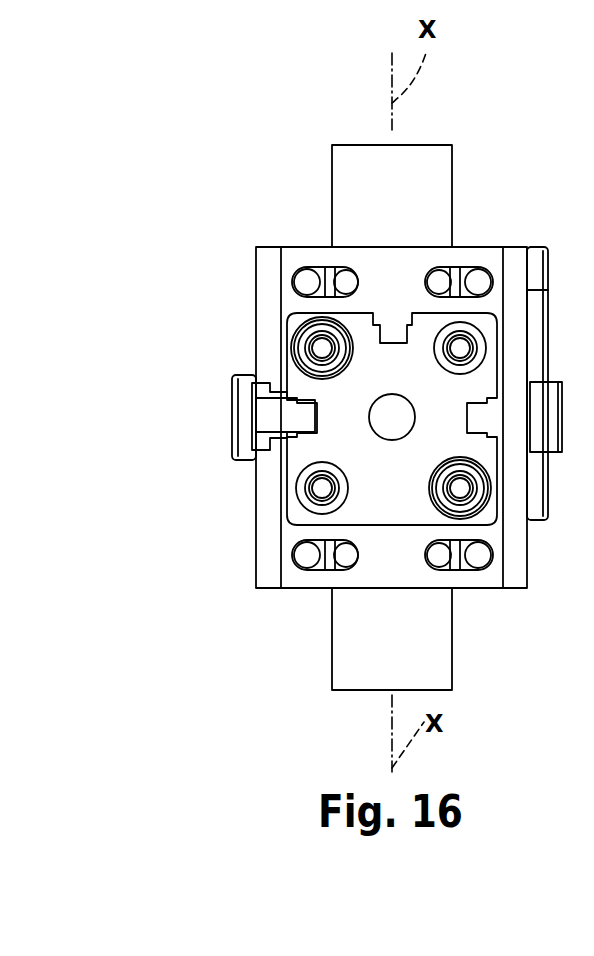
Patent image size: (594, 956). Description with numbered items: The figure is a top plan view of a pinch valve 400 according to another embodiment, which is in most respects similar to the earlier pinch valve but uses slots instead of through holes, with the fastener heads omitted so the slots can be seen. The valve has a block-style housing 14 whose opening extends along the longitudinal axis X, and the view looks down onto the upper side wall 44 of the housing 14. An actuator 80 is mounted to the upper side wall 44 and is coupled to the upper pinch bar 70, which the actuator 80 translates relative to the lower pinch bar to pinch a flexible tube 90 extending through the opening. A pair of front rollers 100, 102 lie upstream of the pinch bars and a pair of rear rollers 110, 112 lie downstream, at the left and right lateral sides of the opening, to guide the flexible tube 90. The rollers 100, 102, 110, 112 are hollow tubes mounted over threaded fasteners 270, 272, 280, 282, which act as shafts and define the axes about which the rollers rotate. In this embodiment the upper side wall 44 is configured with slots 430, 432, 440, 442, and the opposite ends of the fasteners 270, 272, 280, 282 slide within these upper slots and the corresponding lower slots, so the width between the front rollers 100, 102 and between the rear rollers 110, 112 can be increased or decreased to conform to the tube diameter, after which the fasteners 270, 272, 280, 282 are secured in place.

The pinch valve 400 is at (311, 80).
The housing 14 is at (251, 261).
The upper side wall 44 is at (430, 268).
The upper pinch bar 70 is at (267, 392).
The actuator 80 is at (508, 360).
The flexible tube 90 is at (332, 183).
The left front roller 100 is at (350, 570).
The right front roller 102 is at (437, 570).
The left rear roller 110 is at (353, 267).
The right rear roller 112 is at (440, 258).
The threaded fastener 270 is at (305, 555).
The threaded fastener 272 is at (480, 553).
The threaded fastener 280 is at (307, 282).
The threaded fastener 282 is at (478, 281).
The slot 430 is at (342, 541).
The slot 432 is at (438, 545).
The slot 440 is at (356, 278).
The slot 442 is at (470, 276).